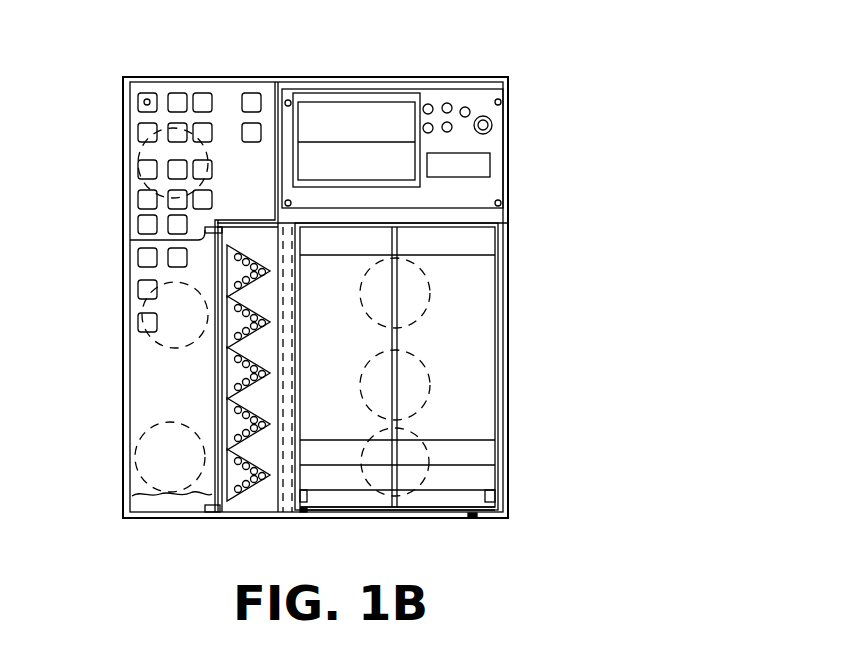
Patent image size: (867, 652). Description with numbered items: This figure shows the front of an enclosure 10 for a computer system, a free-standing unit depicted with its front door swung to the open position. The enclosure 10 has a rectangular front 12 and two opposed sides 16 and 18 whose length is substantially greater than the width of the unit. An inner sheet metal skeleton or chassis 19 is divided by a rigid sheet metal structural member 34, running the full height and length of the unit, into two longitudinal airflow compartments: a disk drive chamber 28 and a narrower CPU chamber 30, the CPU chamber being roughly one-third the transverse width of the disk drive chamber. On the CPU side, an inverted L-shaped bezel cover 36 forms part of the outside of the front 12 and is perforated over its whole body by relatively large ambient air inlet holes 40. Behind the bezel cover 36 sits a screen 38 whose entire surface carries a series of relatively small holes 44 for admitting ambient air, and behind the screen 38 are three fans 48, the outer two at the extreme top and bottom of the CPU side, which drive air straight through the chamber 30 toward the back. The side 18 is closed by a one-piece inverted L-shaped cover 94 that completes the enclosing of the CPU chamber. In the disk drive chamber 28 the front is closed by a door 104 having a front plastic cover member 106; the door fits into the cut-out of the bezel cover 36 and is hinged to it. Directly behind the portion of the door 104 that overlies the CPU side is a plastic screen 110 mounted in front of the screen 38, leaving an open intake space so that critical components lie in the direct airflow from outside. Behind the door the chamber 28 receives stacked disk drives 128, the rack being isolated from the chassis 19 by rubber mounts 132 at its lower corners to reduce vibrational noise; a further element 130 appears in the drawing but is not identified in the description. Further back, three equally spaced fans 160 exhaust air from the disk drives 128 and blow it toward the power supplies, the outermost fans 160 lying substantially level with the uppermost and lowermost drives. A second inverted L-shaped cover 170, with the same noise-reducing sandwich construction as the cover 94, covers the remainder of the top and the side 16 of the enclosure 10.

The enclosure 10 is at (321, 287).
The front 12 is at (510, 130).
The side 16 is at (124, 292).
The side 18 is at (510, 267).
The chassis 19 is at (335, 80).
The disk drive chamber 28 is at (480, 370).
The CPU chamber 30 is at (148, 402).
The structural member 34 is at (289, 125).
The bezel cover 36 is at (218, 105).
The screen 38 is at (190, 500).
The air inlet passageways 40 is at (251, 100).
The holes 44 is at (147, 98).
The fans 48 is at (132, 153).
The cover 94 is at (150, 77).
The door 104 is at (287, 513).
The front plastic cover member 106 is at (130, 240).
The plastic screen 110 is at (265, 500).
The disk drives 128 is at (487, 478).
The shelf supports 130 is at (487, 497).
The rubber mounts 132 is at (485, 520).
The fans 160 is at (408, 323).
The cover 170 is at (455, 77).